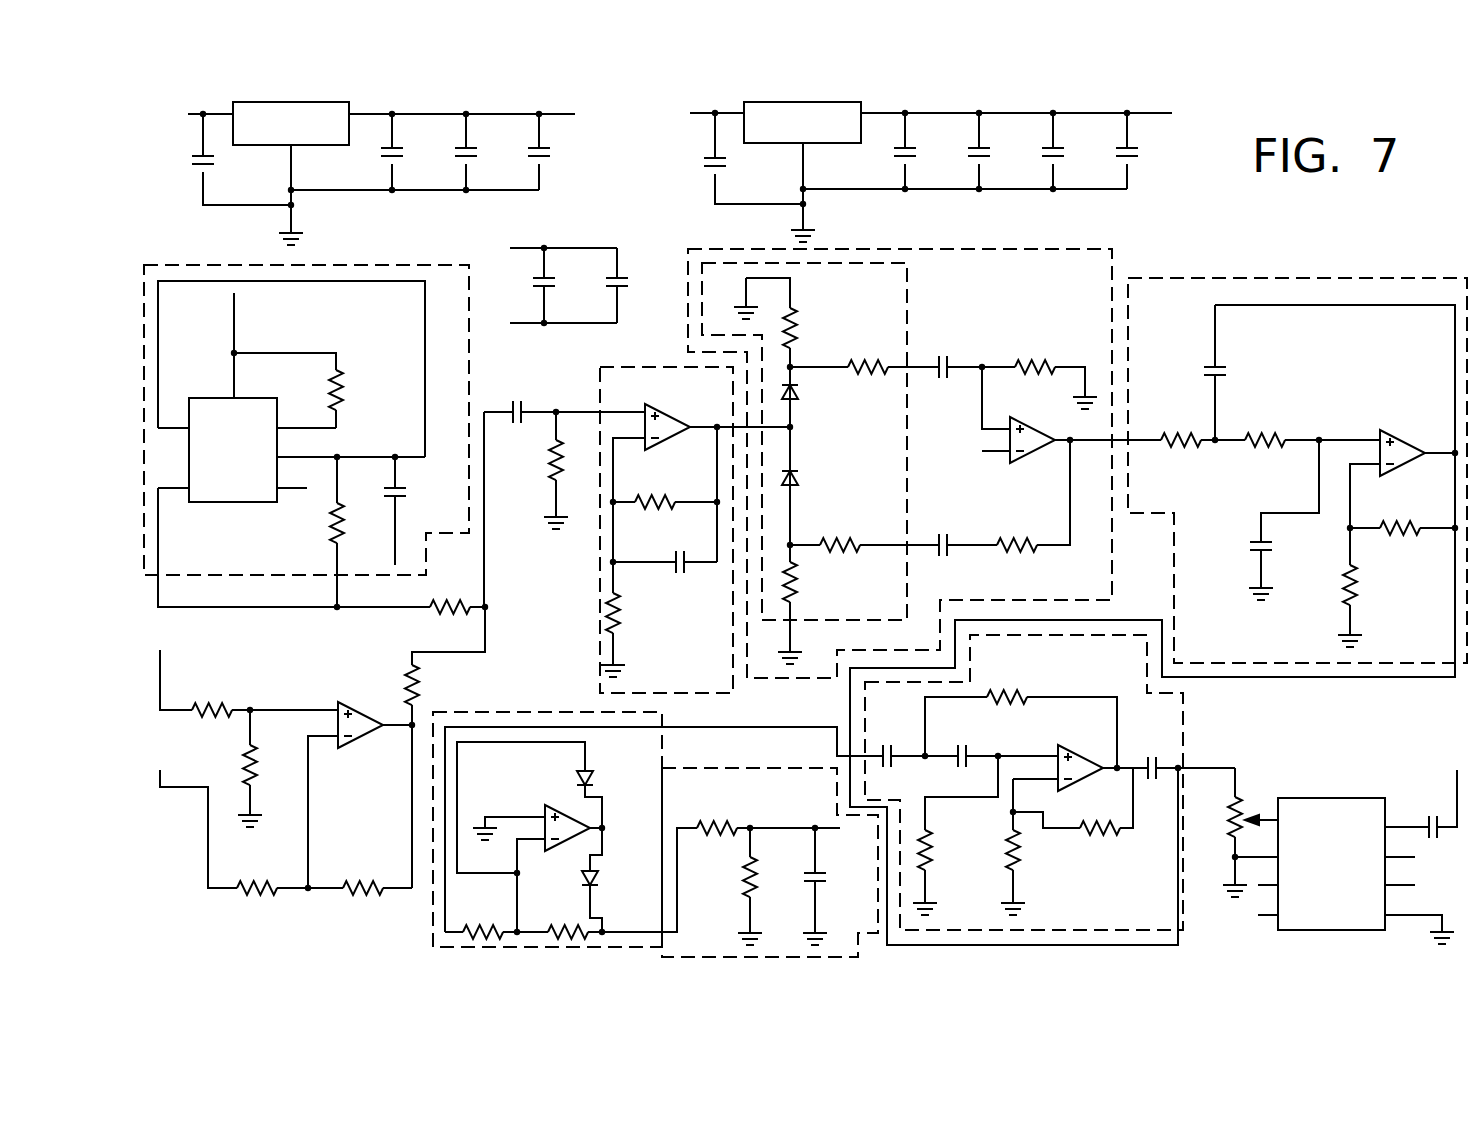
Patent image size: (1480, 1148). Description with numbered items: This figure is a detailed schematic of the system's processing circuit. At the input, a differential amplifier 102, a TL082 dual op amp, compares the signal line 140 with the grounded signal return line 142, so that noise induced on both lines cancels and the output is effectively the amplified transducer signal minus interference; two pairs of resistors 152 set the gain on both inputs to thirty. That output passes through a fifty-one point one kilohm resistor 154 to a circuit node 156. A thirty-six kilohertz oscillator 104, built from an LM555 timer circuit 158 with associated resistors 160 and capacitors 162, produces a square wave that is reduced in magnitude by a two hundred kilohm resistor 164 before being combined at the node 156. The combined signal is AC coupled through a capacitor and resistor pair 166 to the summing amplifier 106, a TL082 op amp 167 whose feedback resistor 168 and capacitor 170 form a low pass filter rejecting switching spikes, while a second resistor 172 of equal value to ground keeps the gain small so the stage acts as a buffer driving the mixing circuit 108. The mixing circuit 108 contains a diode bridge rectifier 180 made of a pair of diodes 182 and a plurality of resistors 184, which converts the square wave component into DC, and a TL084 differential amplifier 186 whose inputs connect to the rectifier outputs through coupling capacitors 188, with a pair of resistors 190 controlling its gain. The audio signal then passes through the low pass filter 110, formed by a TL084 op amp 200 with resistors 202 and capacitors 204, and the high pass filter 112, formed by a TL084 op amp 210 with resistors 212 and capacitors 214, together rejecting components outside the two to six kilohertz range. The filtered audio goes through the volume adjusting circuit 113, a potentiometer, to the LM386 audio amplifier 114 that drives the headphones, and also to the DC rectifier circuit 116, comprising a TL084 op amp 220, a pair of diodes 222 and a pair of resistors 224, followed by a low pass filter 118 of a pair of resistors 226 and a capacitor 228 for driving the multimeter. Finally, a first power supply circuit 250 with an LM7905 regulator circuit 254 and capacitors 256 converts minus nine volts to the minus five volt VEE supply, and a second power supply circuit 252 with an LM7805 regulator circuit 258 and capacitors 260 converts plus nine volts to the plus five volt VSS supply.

The differential amplifier 102 is at (362, 737).
The oscillator 104 is at (232, 268).
The summing amplifier 106 is at (606, 384).
The mixing circuit 108 is at (1110, 272).
The low pass filter 110 is at (1292, 286).
The high pass filter 112 is at (1175, 726).
The volume adjusting circuit 113 is at (1232, 840).
The audio amplifier 114 is at (1352, 805).
The DC rectifier circuit 116 is at (432, 908).
The low pass filter 118 is at (795, 770).
The signal line 140 is at (168, 660).
The signal return line 142 is at (178, 788).
The resistors 152 is at (258, 740).
The resistor 154 is at (412, 680).
The circuit node 156 is at (488, 606).
The timer circuit 158 is at (221, 408).
The resistors 160 is at (342, 364).
The capacitors 162 is at (618, 268).
The resistor 164 is at (428, 610).
The capacitor and resistor pair 166 is at (560, 382).
The op amp 167 is at (613, 502).
The resistor 168 is at (672, 508).
The capacitor 170 is at (692, 568).
The second resistor 172 is at (607, 608).
The diode bridge rectifier 180 is at (898, 605).
The diodes 182 is at (802, 470).
The resistors 184 is at (838, 356).
The differential amplifier 186 is at (1050, 452).
The coupling capacitors 188 is at (952, 508).
The resistors 190 is at (1020, 362).
The op amp 200 is at (1402, 443).
The resistors 202 is at (1285, 434).
The capacitors 204 is at (1203, 371).
The op amp 210 is at (1100, 765).
The resistors 212 is at (1025, 692).
The capacitors 214 is at (880, 750).
The op amp 220 is at (573, 840).
The diodes 222 is at (590, 765).
The resistors 224 is at (517, 925).
The resistors 226 is at (745, 876).
The capacitor 228 is at (812, 868).
The first power supply circuit 250 is at (410, 104).
The second power supply circuit 252 is at (958, 105).
The regulator circuit 254 is at (338, 102).
The capacitors 256 is at (192, 166).
The regulator circuit 258 is at (852, 102).
The capacitors 260 is at (704, 162).